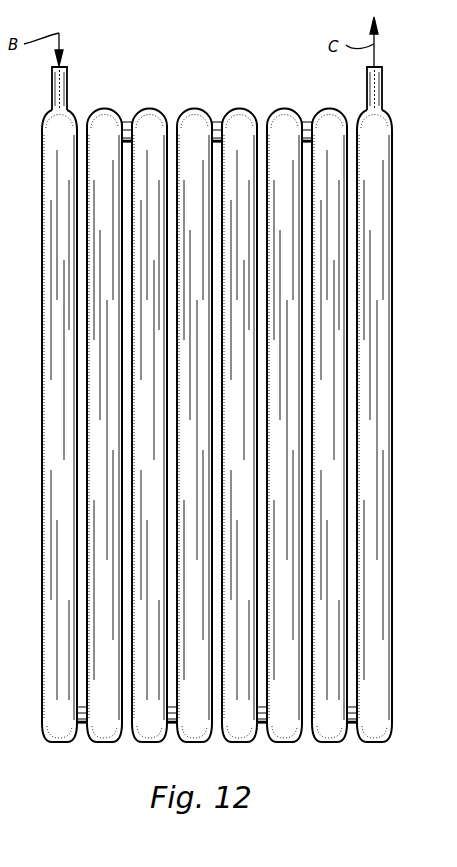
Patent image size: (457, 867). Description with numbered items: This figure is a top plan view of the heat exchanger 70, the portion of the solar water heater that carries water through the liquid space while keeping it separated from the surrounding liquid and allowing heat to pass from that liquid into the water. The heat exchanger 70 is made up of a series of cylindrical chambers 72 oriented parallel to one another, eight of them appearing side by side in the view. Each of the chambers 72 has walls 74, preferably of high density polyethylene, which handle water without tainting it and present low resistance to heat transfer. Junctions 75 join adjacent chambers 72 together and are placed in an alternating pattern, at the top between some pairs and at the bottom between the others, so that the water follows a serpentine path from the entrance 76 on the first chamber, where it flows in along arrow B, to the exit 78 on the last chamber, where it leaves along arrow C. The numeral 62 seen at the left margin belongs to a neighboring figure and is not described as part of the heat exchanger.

The reference from adjacent figure 62 is at (9, 163).
The heat exchanger 70 is at (207, 60).
The cylindrical chambers 72 is at (325, 382).
The walls 74 is at (49, 172).
The junctions 75 is at (127, 122).
The entrance 76 is at (67, 88).
The exit 78 is at (382, 90).